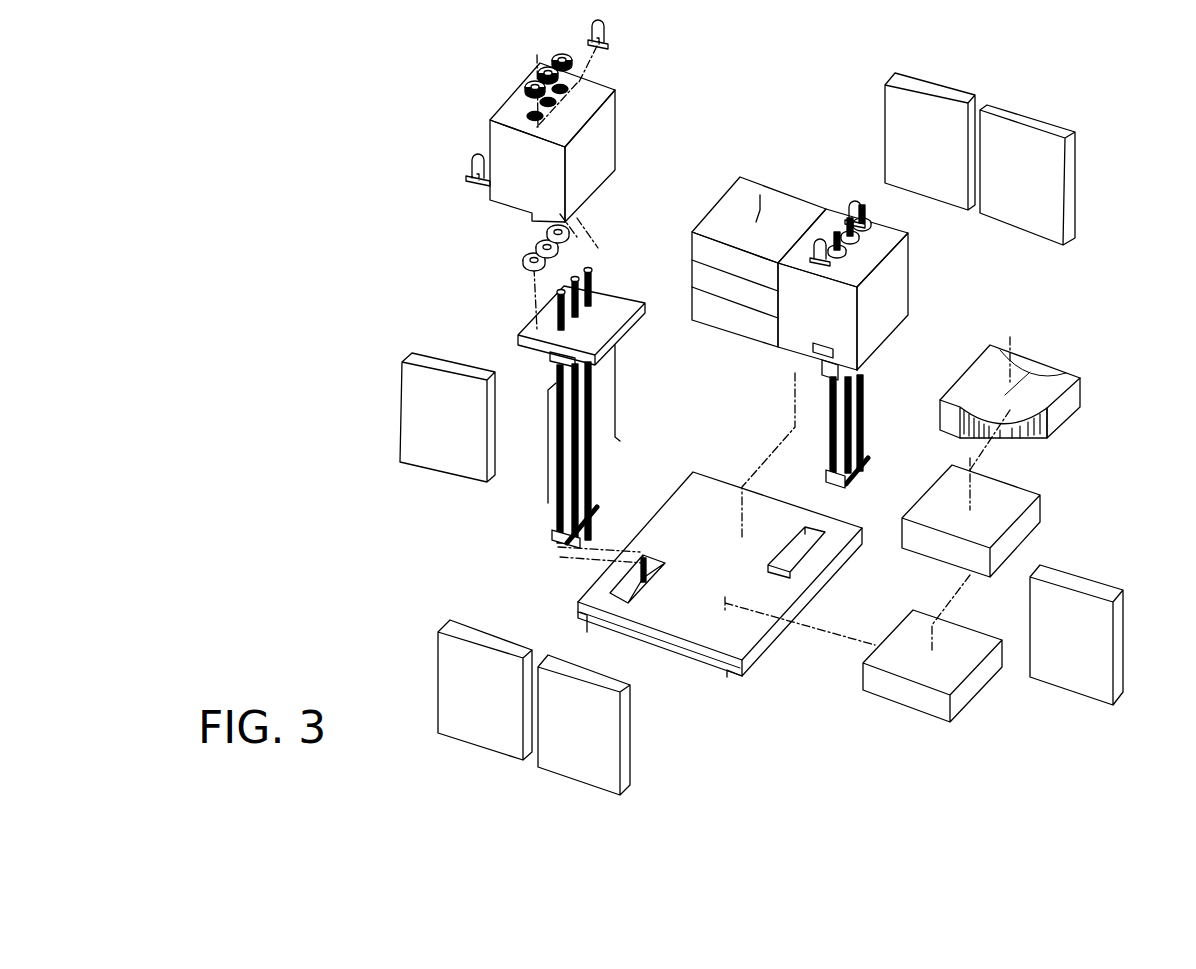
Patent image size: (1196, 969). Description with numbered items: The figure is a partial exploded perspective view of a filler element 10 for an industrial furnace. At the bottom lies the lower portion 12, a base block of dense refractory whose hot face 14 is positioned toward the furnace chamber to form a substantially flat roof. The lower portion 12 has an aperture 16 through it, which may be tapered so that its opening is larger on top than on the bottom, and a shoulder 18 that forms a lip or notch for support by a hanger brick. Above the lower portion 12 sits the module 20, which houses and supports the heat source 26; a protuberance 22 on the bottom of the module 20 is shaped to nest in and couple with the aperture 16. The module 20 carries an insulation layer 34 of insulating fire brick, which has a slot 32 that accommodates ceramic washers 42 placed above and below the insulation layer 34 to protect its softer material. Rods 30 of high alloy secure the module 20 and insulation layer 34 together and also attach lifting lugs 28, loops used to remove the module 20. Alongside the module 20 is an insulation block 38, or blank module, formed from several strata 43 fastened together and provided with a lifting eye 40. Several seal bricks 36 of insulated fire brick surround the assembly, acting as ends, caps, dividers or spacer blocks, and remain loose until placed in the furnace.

The filler element 10 is at (732, 127).
The lower portion 12 is at (690, 628).
The hot face 14 is at (655, 650).
The aperture 16 is at (805, 553).
The shoulder 18 is at (578, 620).
The module 20 is at (525, 332).
The protuberance 22 is at (548, 358).
The heat source 26 is at (590, 483).
The lifting lug 28 is at (607, 30).
The rod 30 is at (618, 423).
The slot 32 is at (510, 205).
The insulation layer 34 is at (608, 140).
The seal brick 36 is at (470, 482).
The insulation block 38 is at (732, 190).
The lifting eye 40 is at (762, 210).
The washer 42 is at (552, 60).
The strata 43 is at (708, 222).